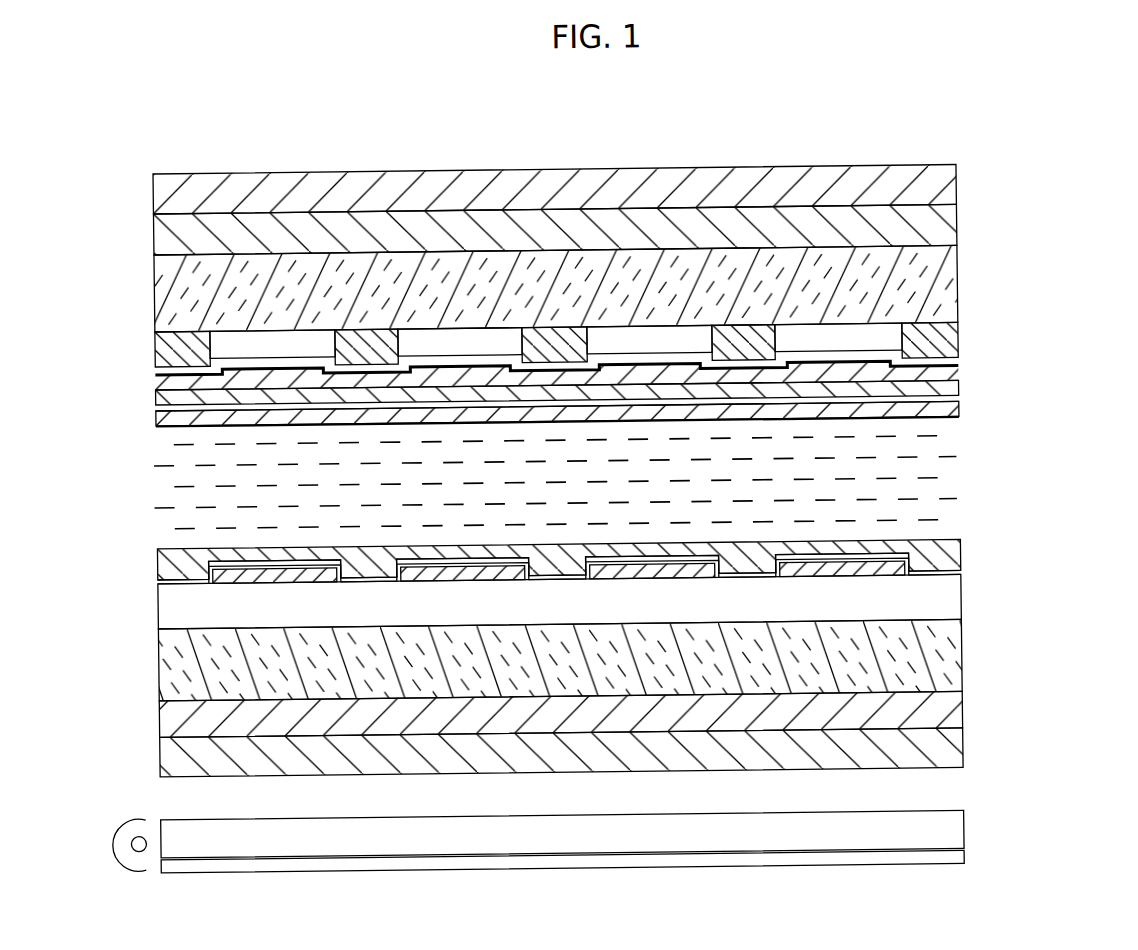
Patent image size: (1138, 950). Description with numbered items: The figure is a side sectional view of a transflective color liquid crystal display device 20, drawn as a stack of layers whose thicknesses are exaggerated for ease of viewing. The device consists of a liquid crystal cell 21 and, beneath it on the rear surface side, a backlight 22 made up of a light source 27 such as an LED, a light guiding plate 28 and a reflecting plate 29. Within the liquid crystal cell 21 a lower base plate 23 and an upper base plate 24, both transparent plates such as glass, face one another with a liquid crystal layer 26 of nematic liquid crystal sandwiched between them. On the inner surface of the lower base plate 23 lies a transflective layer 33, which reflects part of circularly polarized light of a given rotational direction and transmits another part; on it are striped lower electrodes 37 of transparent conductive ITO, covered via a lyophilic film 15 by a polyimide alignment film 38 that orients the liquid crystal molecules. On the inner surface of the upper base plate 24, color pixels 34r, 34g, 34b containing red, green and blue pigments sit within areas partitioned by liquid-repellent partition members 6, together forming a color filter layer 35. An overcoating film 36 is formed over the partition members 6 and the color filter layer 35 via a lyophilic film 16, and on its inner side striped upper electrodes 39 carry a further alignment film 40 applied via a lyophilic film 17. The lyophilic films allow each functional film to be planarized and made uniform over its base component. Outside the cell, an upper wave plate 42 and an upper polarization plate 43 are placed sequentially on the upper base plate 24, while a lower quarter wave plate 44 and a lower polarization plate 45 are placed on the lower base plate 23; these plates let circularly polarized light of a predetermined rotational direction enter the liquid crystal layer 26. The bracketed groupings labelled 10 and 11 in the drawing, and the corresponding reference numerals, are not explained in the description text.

The transflective color liquid crystal display device 20 is at (579, 162).
The counter substrate side unit 10 is at (1068, 166).
The TFT substrate side unit 11 is at (1052, 519).
The lyophilic film 16 is at (956, 359).
The lyophilic film 17 is at (958, 410).
The liquid crystal cell 21 is at (135, 258).
The backlight 22 is at (110, 797).
The lower base plate 23 is at (947, 681).
The upper base plate 24 is at (945, 268).
The liquid crystal layer 26 is at (941, 497).
The light source 27 is at (134, 834).
The light guiding plate 28 is at (946, 832).
The reflecting plate 29 is at (946, 870).
The transflective layer 33 is at (948, 613).
The color filter layer 35 is at (890, 353).
The color pixel 34r is at (303, 340).
The color pixel 34g is at (489, 342).
The color pixel 34b is at (679, 344).
The partition member 6 is at (756, 336).
The overcoating film 36 is at (950, 381).
The upper electrode 39 is at (950, 397).
The alignment film 40 is at (950, 424).
The alignment film 38 is at (956, 560).
The lower electrode 37 is at (942, 573).
The lyophilic film 15 is at (955, 584).
The upper wave plate 42 is at (945, 228).
The upper polarization plate 43 is at (945, 181).
The lower quarter wave plate 44 is at (946, 722).
The lower polarization plate 45 is at (946, 756).